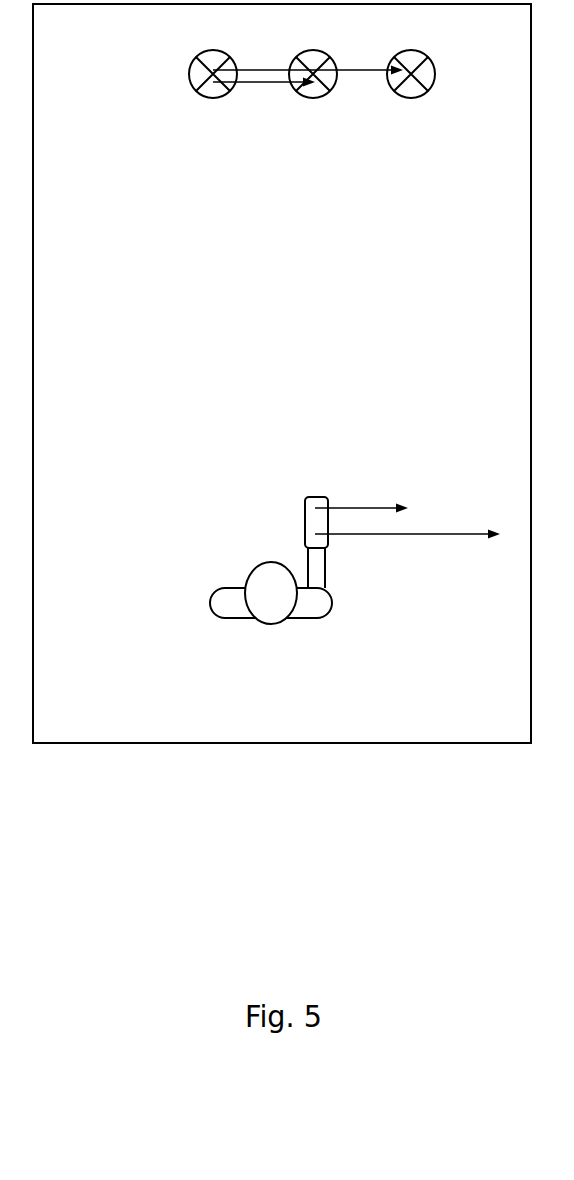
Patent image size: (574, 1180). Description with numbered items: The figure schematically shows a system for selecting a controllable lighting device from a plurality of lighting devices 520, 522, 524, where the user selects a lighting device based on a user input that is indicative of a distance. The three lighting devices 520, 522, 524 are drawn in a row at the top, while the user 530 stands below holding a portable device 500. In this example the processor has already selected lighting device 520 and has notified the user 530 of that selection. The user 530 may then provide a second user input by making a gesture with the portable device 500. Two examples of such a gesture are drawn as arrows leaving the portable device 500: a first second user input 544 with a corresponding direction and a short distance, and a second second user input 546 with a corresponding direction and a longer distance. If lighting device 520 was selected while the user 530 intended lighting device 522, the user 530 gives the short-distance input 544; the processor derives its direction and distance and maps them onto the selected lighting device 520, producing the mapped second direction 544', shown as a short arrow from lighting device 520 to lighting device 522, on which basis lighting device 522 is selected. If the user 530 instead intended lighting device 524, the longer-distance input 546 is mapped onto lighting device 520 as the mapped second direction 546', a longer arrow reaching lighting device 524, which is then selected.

The portable device 500 is at (308, 523).
The lighting device 520 is at (210, 100).
The lighting device 522 is at (311, 100).
The lighting device 524 is at (409, 100).
The user 530 is at (237, 603).
The second user input 544 is at (379, 456).
The second user input 546 is at (407, 589).
The mapped second direction 544' is at (251, 127).
The mapped second direction 546' is at (308, 120).